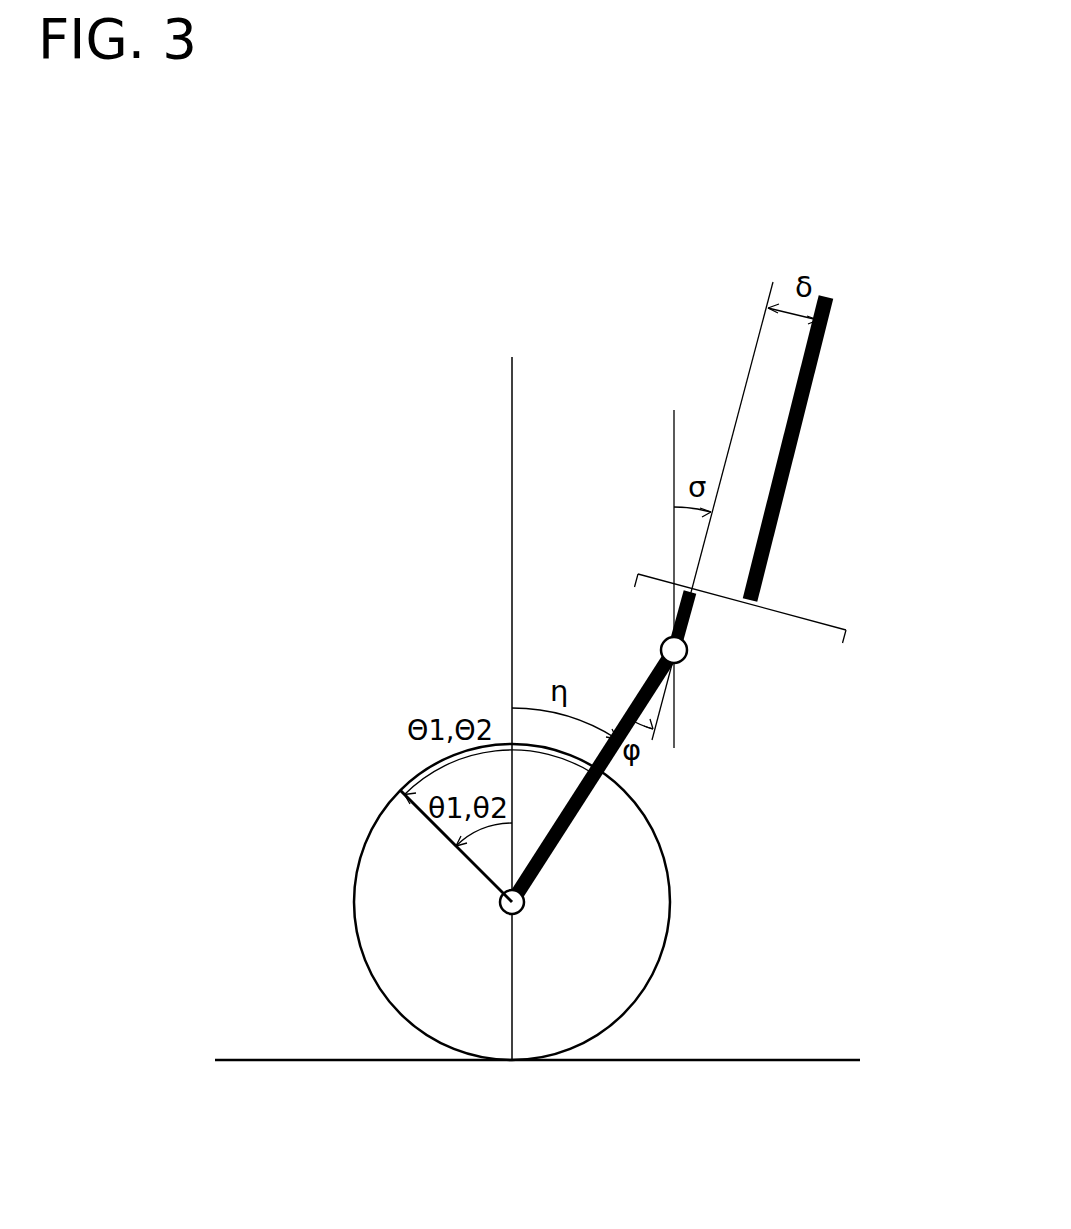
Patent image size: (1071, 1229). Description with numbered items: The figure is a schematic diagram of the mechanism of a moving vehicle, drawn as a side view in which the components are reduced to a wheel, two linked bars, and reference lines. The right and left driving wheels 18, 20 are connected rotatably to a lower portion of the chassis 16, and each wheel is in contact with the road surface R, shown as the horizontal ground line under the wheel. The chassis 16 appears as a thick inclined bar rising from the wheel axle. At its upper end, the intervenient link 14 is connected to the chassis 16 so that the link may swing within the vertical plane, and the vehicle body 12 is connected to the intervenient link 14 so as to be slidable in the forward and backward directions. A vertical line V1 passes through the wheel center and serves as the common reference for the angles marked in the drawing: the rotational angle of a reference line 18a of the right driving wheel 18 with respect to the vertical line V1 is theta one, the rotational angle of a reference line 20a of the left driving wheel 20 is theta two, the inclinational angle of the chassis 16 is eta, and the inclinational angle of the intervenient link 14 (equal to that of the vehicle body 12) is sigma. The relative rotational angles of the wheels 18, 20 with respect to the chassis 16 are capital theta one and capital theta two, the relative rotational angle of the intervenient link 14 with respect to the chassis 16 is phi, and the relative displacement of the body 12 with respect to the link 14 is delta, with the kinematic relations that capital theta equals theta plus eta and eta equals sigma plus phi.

The vehicle body 12 is at (805, 423).
The intervenient link 14 is at (692, 623).
The chassis 16 is at (640, 687).
The right driving wheel 18 is at (593, 902).
The left driving wheel 20 is at (675, 900).
The reference line of the right driving wheel 18a is at (343, 862).
The reference line of the left driving wheel 20a is at (473, 868).
The road surface R is at (777, 1060).
The vertical line V1 is at (513, 388).